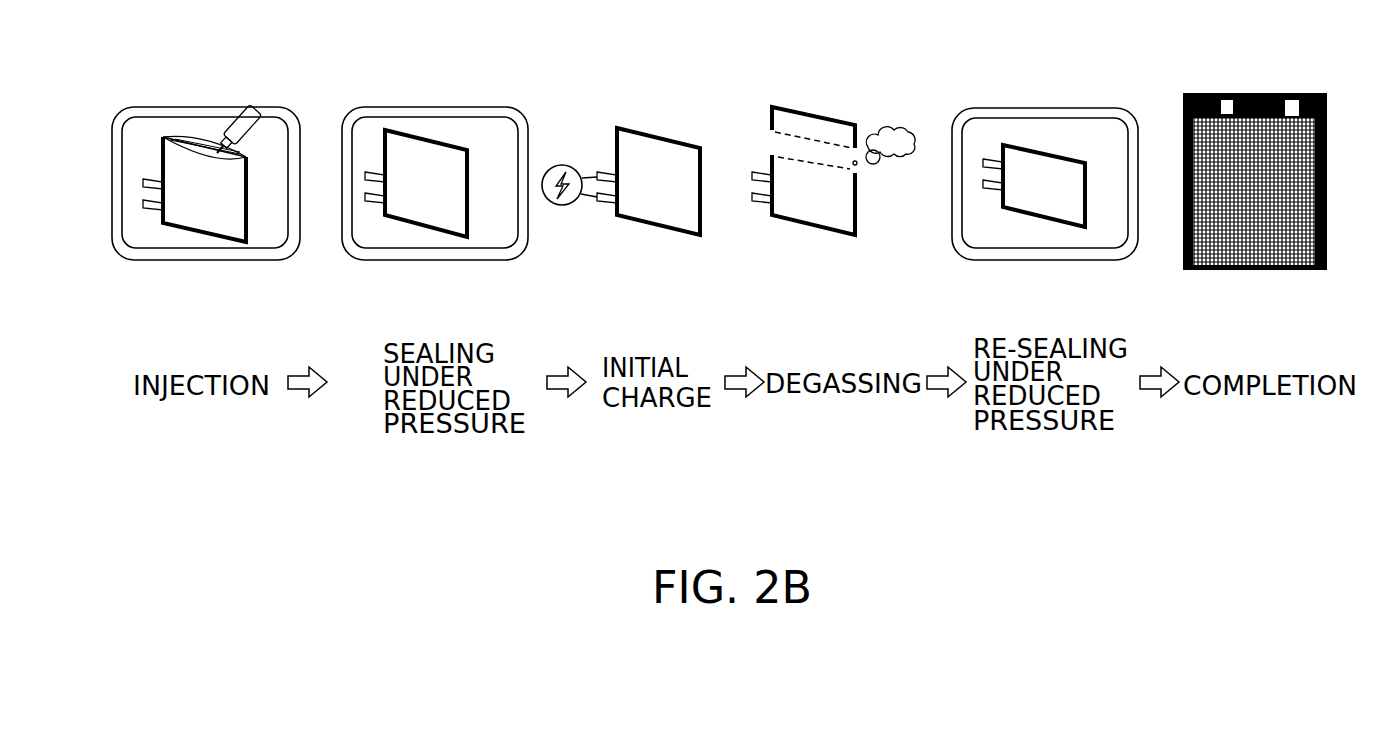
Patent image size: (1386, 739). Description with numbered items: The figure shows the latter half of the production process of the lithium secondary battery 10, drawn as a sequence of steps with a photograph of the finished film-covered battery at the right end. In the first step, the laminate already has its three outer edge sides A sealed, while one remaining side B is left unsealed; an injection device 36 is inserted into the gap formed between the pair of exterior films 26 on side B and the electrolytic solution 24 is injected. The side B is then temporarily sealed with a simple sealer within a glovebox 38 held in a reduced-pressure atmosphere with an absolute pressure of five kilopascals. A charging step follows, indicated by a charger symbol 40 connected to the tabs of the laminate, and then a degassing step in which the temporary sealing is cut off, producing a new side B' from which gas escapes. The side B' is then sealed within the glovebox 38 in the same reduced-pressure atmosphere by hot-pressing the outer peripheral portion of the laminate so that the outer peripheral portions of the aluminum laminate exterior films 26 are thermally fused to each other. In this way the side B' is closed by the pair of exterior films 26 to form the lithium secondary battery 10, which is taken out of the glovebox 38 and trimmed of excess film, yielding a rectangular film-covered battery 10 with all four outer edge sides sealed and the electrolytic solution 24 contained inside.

The lithium secondary battery 10 is at (1042, 172).
The electrolytic solution 24 is at (215, 146).
The exterior films 26 is at (225, 182).
The injection device 36 is at (250, 108).
The glovebox 38 is at (248, 262).
The charger 40 is at (560, 205).
The three outer edge sides A is at (155, 196).
The remaining side B is at (481, 95).
The side generated by cutting off the temporary sealing B' is at (885, 100).